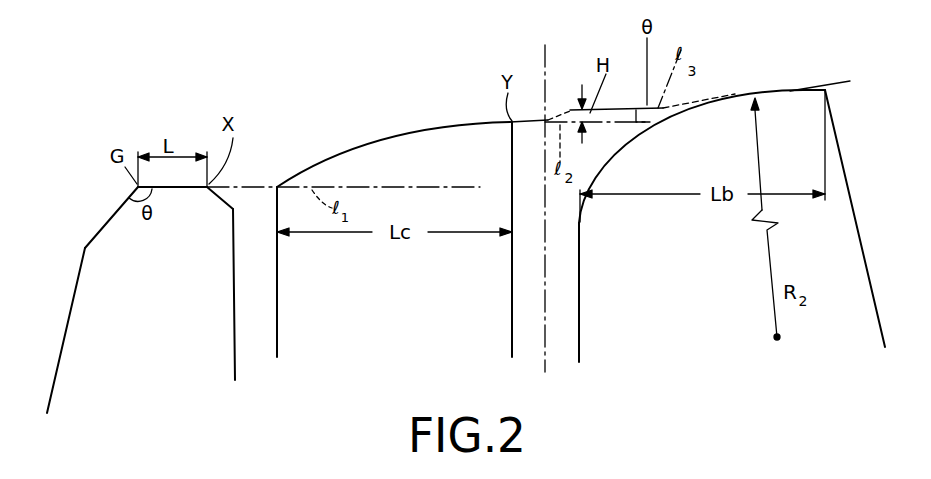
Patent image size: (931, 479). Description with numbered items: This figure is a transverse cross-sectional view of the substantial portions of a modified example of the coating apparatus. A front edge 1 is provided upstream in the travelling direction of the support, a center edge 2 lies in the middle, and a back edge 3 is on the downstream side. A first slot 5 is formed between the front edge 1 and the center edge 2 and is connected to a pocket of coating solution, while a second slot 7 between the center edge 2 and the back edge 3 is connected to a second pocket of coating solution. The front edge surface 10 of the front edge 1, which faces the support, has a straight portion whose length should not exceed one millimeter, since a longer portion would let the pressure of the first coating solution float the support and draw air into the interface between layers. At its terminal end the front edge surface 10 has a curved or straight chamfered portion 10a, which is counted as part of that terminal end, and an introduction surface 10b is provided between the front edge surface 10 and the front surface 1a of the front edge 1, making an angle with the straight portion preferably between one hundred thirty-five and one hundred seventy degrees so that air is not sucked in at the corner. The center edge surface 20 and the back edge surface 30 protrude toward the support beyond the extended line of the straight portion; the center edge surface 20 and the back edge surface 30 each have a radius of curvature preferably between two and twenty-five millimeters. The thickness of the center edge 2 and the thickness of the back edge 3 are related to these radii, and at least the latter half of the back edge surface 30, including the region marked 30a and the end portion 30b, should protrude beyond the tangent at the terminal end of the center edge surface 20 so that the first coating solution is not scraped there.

The front edge 1 is at (157, 281).
The front surface of front edge 1a is at (60, 346).
The center edge 2 is at (394, 225).
The back edge 3 is at (730, 201).
The first slot 5 is at (240, 316).
The second slot 7 is at (583, 334).
The front edge surface 10 is at (182, 184).
The chamfered portion 10a is at (229, 200).
The introduction surface 10b is at (112, 216).
The center edge surface 20 is at (388, 137).
The back edge surface 30 is at (707, 93).
The point on curved surface 30a is at (625, 157).
The top flat of third section 30b is at (789, 89).